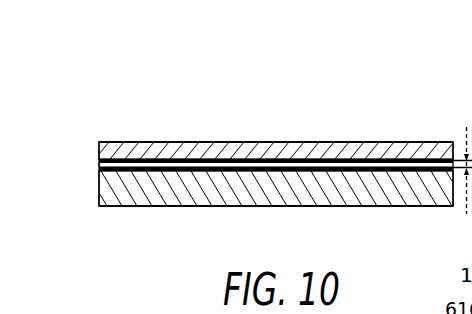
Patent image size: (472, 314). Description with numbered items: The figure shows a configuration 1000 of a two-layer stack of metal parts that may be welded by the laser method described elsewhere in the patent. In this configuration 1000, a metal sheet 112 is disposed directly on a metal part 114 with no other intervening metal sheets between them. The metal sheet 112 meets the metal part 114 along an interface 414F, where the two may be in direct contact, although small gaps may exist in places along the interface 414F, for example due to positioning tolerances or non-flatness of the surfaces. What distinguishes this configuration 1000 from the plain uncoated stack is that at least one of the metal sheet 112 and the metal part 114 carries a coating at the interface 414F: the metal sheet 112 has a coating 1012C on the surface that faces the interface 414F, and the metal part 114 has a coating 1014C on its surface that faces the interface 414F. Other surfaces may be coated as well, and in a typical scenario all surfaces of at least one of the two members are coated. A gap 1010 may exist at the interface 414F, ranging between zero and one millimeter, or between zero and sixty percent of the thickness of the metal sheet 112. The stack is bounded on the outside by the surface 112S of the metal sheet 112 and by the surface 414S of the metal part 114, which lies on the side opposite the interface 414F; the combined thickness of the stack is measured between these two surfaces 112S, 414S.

The configuration 1000 is at (128, 36).
The metal sheet 112 is at (98, 154).
The metal part 114 is at (98, 187).
The surface 112S is at (142, 135).
The surface 414S is at (162, 213).
The interface 414F is at (92, 168).
The coating 1012C is at (283, 159).
The coating 1014C is at (313, 171).
The coating thickness 1010 is at (453, 160).